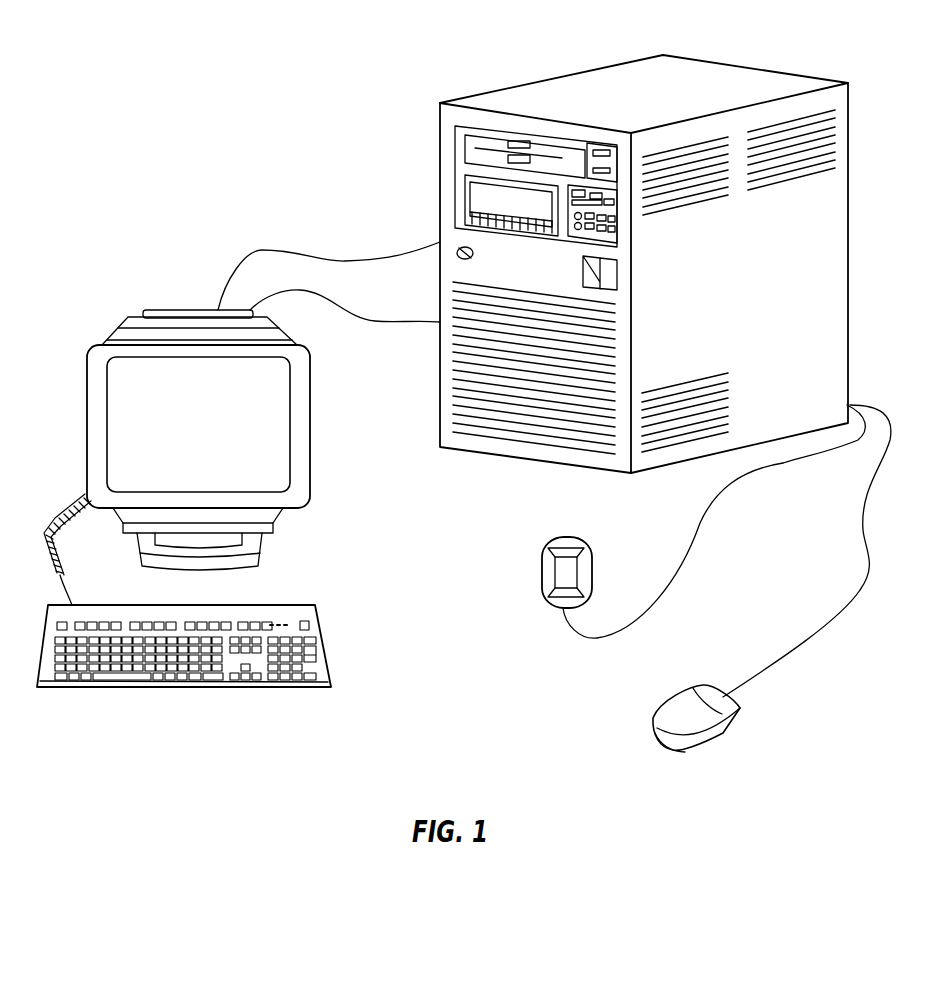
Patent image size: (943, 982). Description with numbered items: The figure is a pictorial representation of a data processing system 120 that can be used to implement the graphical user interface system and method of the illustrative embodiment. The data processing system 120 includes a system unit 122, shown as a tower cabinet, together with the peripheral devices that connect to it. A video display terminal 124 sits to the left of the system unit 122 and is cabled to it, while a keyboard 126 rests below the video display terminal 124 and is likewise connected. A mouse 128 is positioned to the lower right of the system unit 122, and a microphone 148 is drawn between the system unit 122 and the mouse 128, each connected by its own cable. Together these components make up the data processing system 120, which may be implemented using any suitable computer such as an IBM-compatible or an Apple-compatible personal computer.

The data processing system 120 is at (172, 102).
The system unit 122 is at (450, 235).
The video display terminal 124 is at (168, 310).
The keyboard 126 is at (190, 688).
The mouse 128 is at (667, 708).
The microphone 148 is at (540, 575).